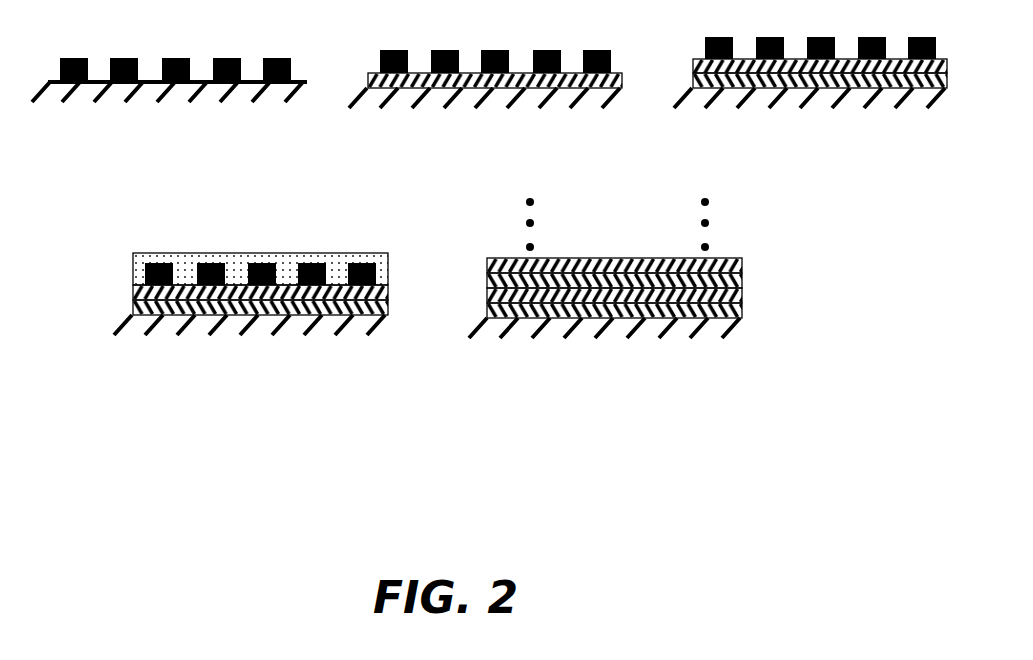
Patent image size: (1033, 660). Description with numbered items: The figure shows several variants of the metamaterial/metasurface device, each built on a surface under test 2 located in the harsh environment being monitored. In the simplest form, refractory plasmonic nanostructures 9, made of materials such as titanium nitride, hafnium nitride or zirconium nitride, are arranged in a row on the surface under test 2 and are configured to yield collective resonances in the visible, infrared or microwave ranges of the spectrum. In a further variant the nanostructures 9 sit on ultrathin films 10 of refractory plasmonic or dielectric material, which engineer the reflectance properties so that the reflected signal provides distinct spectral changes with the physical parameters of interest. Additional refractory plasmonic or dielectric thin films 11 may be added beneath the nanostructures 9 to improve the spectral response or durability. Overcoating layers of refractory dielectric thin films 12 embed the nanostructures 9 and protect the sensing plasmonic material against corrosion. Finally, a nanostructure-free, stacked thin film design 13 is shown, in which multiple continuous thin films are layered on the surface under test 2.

The surface under test 2 is at (78, 105).
The refractory plasmonic nanostructures 9 is at (173, 58).
The ultrathin films 10 is at (372, 73).
The additional refractory plasmonic or dielectric thin films 11 is at (702, 59).
The refractory dielectric thin films 12 is at (138, 265).
The stacked thin film designs 13 is at (522, 253).